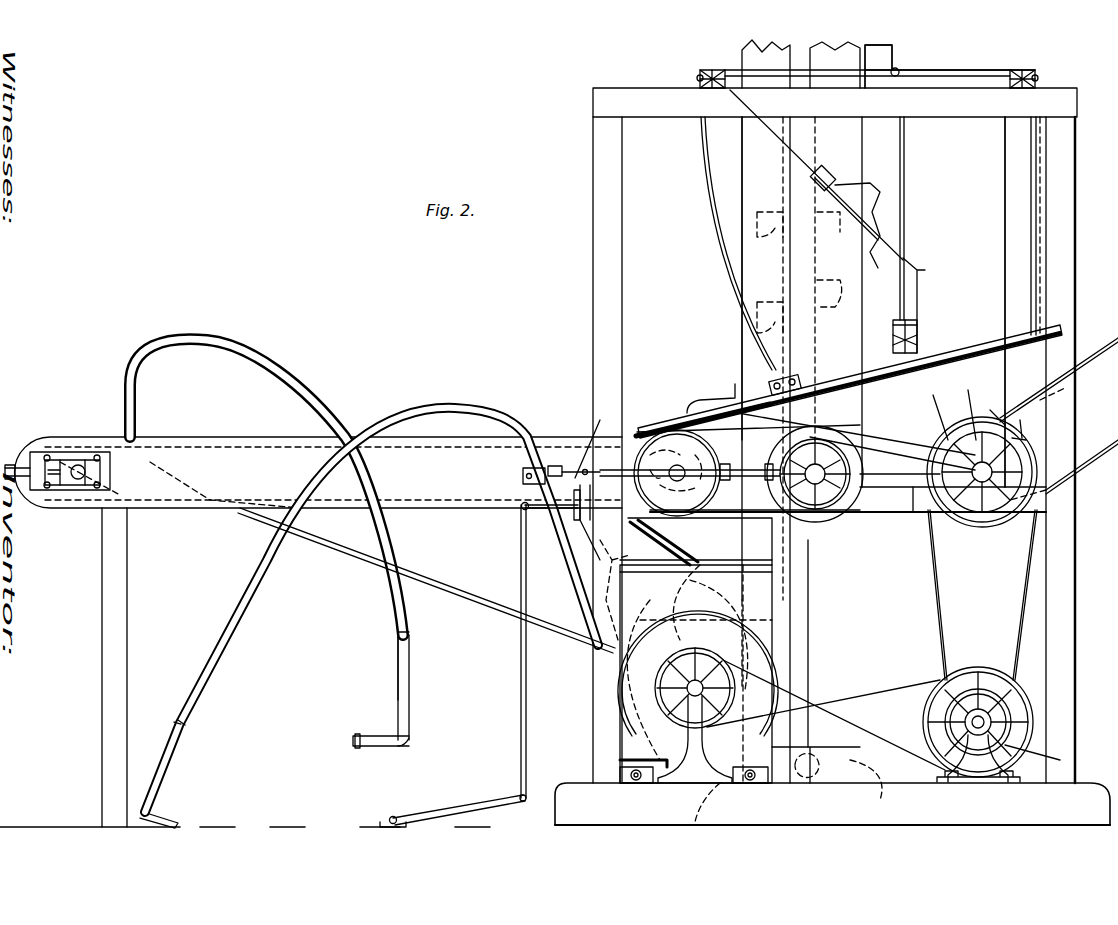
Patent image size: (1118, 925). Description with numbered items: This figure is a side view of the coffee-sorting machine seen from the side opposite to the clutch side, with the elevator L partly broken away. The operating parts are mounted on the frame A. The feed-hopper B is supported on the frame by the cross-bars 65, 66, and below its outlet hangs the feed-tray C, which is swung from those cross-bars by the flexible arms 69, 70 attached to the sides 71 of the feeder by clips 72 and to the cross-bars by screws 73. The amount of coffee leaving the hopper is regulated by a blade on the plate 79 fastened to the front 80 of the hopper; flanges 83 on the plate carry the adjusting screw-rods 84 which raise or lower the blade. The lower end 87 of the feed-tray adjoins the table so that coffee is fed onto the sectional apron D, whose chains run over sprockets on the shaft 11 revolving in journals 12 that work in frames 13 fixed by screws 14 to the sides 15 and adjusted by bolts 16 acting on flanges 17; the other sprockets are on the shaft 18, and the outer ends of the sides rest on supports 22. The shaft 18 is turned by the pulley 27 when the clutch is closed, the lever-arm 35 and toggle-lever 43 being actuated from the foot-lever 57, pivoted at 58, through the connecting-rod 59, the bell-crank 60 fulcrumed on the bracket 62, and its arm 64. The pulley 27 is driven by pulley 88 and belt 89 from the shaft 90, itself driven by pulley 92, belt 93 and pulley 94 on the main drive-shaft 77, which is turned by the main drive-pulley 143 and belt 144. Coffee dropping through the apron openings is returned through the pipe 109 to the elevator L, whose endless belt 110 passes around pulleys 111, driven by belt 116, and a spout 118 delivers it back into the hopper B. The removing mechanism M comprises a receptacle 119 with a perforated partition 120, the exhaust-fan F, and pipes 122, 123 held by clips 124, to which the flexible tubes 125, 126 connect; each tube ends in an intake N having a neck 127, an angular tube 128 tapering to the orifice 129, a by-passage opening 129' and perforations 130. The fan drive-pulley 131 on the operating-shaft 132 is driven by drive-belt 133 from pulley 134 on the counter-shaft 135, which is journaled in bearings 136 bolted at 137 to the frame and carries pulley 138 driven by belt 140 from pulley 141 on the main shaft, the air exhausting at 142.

The frame A is at (593, 257).
The feed-hopper B is at (920, 302).
The feed-tray C is at (850, 370).
The apron D is at (232, 437).
The exhaust-fan F is at (618, 690).
The elevator L is at (742, 323).
The mechanism for removing and receiving inferior coffee-beans M is at (628, 598).
The intakes N is at (180, 766).
The shaft 11 is at (100, 478).
The journals 12 is at (80, 480).
The frames 13 is at (75, 452).
The screws 14 is at (98, 455).
The sides 15 is at (180, 485).
The bolts 16 is at (17, 466).
The flanges 17 is at (58, 485).
The shaft 18 is at (675, 465).
The supports 22 is at (127, 590).
The pulley 27 is at (748, 467).
The lever-arm 35 is at (746, 470).
The toggle-lever 43 is at (554, 466).
The foot-lever 57 is at (453, 818).
The pivot 58 is at (392, 816).
The connecting-rod 59 is at (521, 662).
The bell-crank 60 is at (527, 503).
The bracket 62 is at (567, 522).
The arm 64 is at (580, 478).
The cross-bar 65 is at (712, 70).
The cross-bar 66 is at (1025, 70).
The flexible arm 69 is at (725, 248).
The flexible arm 70 is at (1037, 230).
The sides 71 is at (960, 352).
The clips 72 is at (800, 382).
The screws 73 is at (697, 78).
The main drive-shaft 77 is at (980, 480).
The plate 79 is at (915, 325).
The front 80 is at (915, 284).
The flanges 83 is at (893, 330).
The adjusting screw-rods 84 is at (906, 204).
The lower end of the feed-tray 87 is at (646, 432).
The pulley 88 is at (862, 474).
The belt 89 is at (735, 384).
The shaft 90 is at (875, 432).
The pulley 92 is at (826, 518).
The belt 93 is at (905, 520).
The pulley 94 is at (1046, 410).
The pipe 109 is at (665, 545).
The endless belt 110 is at (757, 222).
The pulleys 111 is at (845, 780).
The belt 116 is at (943, 406).
The spout 118 is at (893, 50).
The receptacle 119 is at (706, 565).
The horizontal partition 120 is at (696, 671).
The pipe 122 is at (445, 580).
The pipe 123 is at (574, 515).
The clips 124 is at (522, 474).
The flexible tube 125 is at (283, 372).
The flexible tube 126 is at (466, 403).
The neck 127 is at (410, 664).
The angular tube 128 is at (370, 736).
The orifice 129 is at (321, 735).
The by-passage opening 129' is at (303, 712).
The perforations 130 is at (358, 746).
The drive-pulley 131 is at (672, 715).
The operating-shaft 132 is at (860, 694).
The drive-belt 133 is at (880, 745).
The pulley 134 is at (1030, 700).
The counter-shaft 135 is at (980, 718).
The bearings 136 is at (975, 778).
The bolts 137 is at (1012, 782).
The pulley 138 is at (1060, 760).
The belt 140 is at (1027, 584).
The pulley 141 is at (1062, 470).
The fan exhaust 142 is at (620, 770).
The main drive-pulley 143 is at (985, 430).
The belt 144 is at (1085, 356).